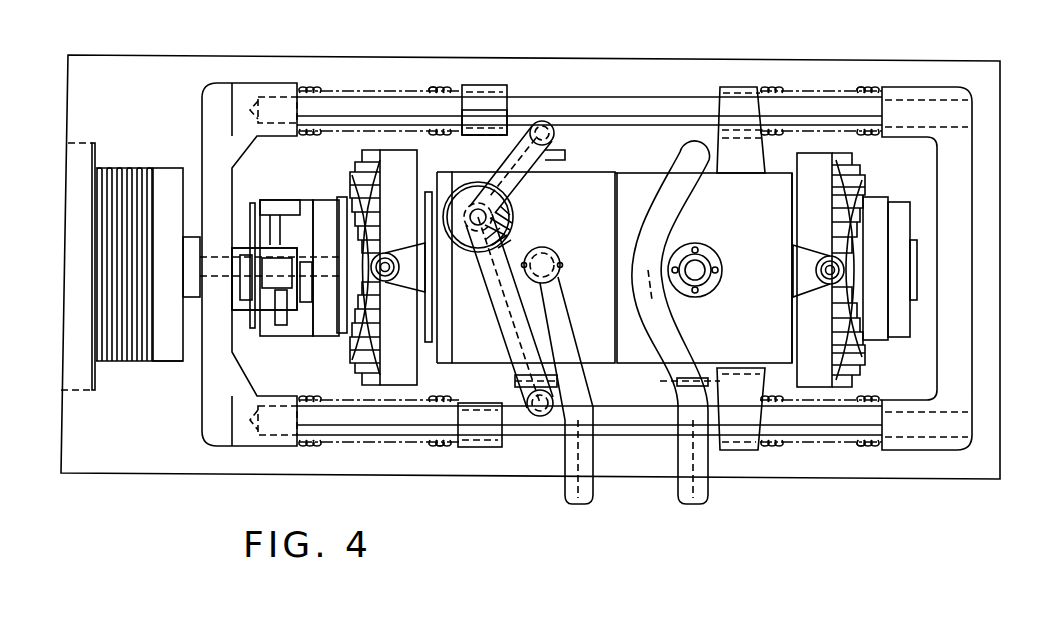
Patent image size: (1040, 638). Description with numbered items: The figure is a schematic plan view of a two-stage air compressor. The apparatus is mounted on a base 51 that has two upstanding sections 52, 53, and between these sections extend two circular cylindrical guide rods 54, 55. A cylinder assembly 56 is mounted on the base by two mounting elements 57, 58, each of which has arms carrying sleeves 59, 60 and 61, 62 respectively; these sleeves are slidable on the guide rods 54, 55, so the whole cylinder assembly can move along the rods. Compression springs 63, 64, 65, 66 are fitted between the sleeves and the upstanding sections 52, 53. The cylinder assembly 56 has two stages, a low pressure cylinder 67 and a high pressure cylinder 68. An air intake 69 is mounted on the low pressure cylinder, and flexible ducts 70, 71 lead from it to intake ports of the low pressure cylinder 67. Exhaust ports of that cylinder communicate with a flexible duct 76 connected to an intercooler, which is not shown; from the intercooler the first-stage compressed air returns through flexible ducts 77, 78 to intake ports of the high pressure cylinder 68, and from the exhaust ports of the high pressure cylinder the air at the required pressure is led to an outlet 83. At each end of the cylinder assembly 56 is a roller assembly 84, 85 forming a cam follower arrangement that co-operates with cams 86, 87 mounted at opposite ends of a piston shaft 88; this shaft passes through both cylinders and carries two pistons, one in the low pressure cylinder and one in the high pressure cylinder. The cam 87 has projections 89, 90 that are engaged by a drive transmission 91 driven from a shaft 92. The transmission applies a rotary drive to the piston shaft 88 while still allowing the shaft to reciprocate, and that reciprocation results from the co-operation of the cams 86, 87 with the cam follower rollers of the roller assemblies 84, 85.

The base 51 is at (650, 72).
The upstanding section 52 is at (915, 93).
The upstanding section 53 is at (210, 100).
The guide rod 54 is at (605, 97).
The guide rod 55 is at (638, 440).
The cylinder assembly 56 is at (628, 187).
The mounting element 57 is at (757, 188).
The mounting element 58 is at (462, 147).
The sleeve 59 is at (753, 452).
The sleeve 60 is at (735, 85).
The sleeve 61 is at (477, 447).
The sleeve 62 is at (480, 85).
The compression spring 63 is at (860, 445).
The compression spring 64 is at (862, 90).
The compression spring 65 is at (440, 447).
The compression spring 66 is at (438, 88).
The low pressure cylinder 67 is at (603, 284).
The high pressure cylinder 68 is at (720, 230).
The air intake 69 is at (518, 223).
The flexible duct 70 is at (492, 313).
The flexible duct 71 is at (532, 177).
The flexible duct 76 is at (582, 393).
The flexible duct 77 is at (665, 385).
The flexible duct 78 is at (657, 195).
The outlet 83 is at (715, 282).
The roller assembly 84 is at (868, 167).
The roller assembly 85 is at (360, 152).
The cam 86 is at (878, 342).
The cam 87 is at (347, 337).
The piston shaft 88 is at (850, 290).
The projection 89 is at (288, 330).
The projection 90 is at (277, 210).
The drive transmission 91 is at (242, 318).
The shaft 92 is at (72, 245).